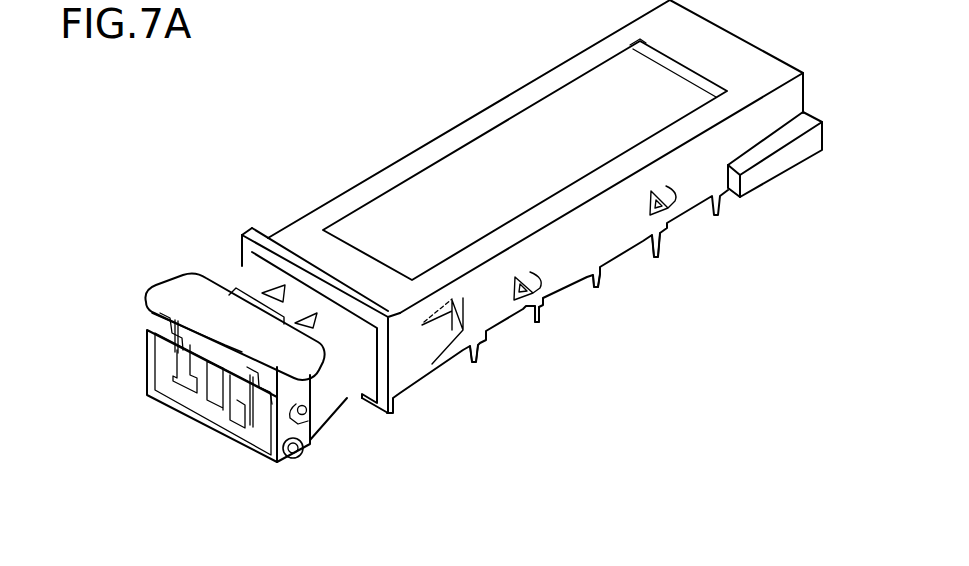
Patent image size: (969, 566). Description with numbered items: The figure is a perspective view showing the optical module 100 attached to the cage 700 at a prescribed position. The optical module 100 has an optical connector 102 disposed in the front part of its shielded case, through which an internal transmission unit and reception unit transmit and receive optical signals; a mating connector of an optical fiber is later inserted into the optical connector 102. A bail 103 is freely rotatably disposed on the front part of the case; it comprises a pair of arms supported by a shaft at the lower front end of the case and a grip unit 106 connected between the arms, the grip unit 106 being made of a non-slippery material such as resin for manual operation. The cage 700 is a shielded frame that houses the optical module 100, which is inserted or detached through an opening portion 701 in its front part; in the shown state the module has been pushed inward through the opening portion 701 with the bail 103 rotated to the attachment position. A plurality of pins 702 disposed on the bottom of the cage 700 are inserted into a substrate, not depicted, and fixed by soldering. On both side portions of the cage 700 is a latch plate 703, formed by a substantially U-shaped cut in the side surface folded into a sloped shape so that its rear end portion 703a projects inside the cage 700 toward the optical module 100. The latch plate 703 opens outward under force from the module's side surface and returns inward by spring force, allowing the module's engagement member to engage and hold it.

The optical module 100 is at (212, 255).
The optical connector 102 is at (240, 415).
The bail 103 is at (131, 324).
The grip unit 106 is at (170, 285).
The cage 700 is at (504, 108).
The opening portion 701 is at (344, 321).
The pins 702 is at (656, 257).
The latch plate 703 is at (441, 325).
The rear end portion 703a is at (458, 317).